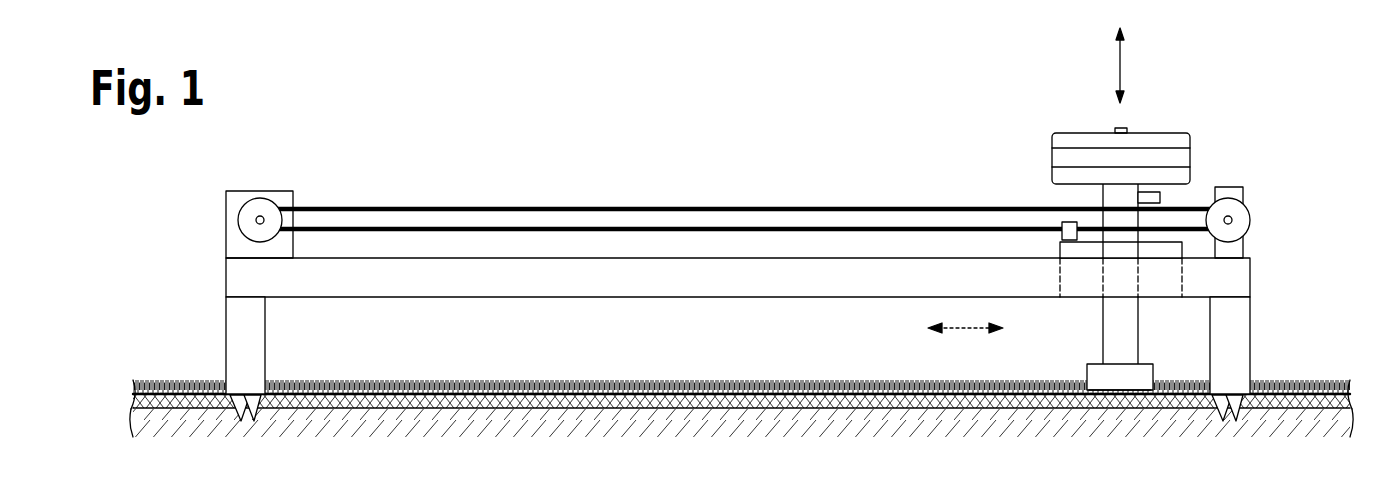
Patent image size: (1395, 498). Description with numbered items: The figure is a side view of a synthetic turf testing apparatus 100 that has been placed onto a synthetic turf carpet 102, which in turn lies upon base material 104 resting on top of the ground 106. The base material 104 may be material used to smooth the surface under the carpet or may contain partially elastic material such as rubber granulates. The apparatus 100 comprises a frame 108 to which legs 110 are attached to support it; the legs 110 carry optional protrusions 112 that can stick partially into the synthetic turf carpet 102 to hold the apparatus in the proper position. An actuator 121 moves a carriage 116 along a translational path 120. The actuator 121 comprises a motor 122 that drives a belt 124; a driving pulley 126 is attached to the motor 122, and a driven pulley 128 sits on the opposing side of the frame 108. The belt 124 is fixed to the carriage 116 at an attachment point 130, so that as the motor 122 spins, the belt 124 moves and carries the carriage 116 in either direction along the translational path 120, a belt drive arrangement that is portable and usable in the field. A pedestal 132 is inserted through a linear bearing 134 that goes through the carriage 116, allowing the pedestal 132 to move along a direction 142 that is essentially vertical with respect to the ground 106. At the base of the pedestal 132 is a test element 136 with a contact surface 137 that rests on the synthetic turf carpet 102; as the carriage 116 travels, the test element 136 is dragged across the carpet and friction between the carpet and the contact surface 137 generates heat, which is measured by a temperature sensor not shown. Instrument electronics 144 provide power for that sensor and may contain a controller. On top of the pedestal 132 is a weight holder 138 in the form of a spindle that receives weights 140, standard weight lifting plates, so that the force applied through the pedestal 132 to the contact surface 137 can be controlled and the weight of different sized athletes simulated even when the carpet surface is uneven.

The synthetic turf testing apparatus 100 is at (1274, 113).
The synthetic turf carpet 102 is at (157, 380).
The base material 104 is at (135, 398).
The ground 106 is at (165, 420).
The frame 108 is at (240, 278).
The legs 110 is at (262, 352).
The protrusions 112 is at (255, 423).
The carriage 116 is at (1170, 250).
The translational path 120 is at (960, 332).
The actuator 121 is at (195, 190).
The motor 122 is at (283, 192).
The belt 124 is at (473, 207).
The driving pulley 126 is at (246, 218).
The driven pulley 128 is at (1251, 220).
The attachment point 130 is at (1060, 238).
The pedestal 132 is at (1112, 332).
The linear bearing 134 is at (1125, 280).
The test element 136 is at (1132, 380).
The contact surface 137 is at (1110, 385).
The weight holder 138 is at (1128, 128).
The weights 140 is at (1042, 128).
The direction 142 is at (1122, 62).
The instrument electronics 144 is at (1160, 197).